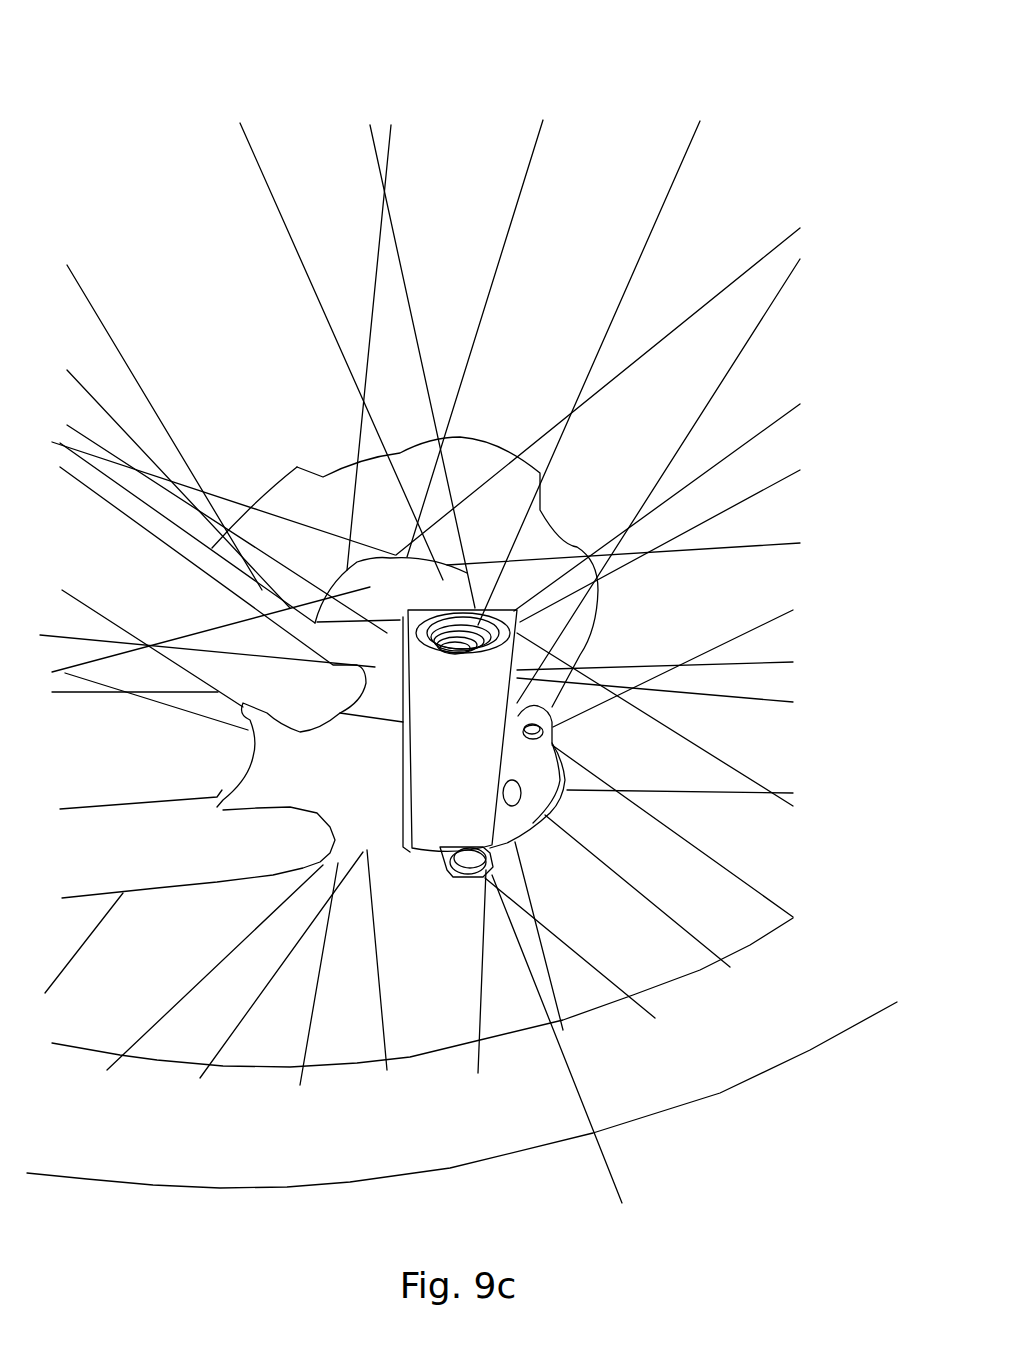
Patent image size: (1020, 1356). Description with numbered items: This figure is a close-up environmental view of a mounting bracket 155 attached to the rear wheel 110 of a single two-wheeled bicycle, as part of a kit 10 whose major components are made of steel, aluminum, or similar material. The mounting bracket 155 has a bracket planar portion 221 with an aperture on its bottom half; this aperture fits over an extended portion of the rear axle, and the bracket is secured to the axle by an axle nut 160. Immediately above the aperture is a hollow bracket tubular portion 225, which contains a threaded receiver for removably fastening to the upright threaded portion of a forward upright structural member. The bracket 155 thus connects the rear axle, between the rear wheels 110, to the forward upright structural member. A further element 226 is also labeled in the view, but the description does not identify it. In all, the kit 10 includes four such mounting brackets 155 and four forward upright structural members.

The kit 10 is at (163, 168).
The rear wheel 110 is at (720, 1093).
The mounting bracket 155 is at (620, 635).
The axle nut 160 is at (572, 1059).
The bracket planar portion 221 is at (422, 850).
The bracket tubular portion 225 is at (427, 710).
The axle bore 226 is at (480, 620).